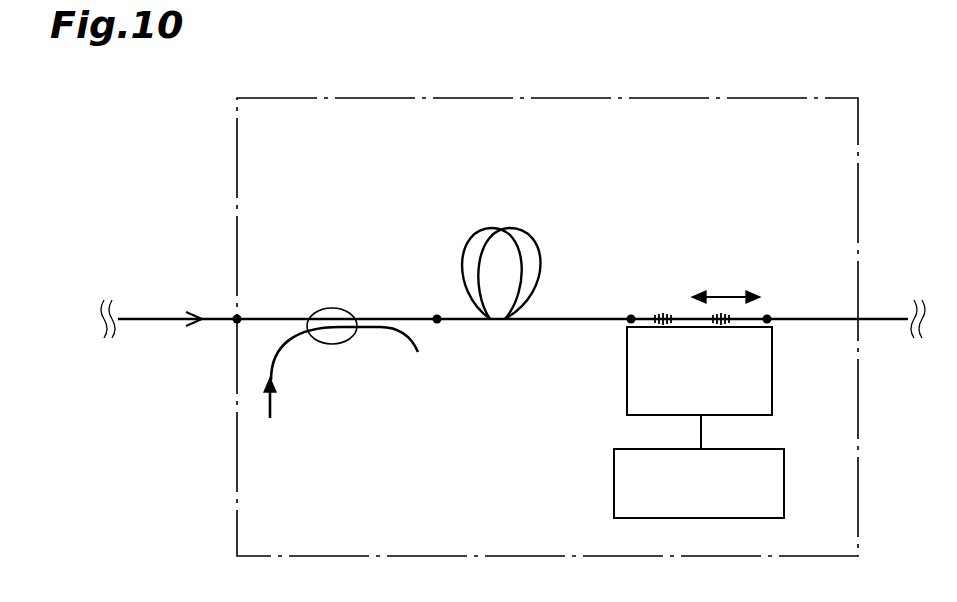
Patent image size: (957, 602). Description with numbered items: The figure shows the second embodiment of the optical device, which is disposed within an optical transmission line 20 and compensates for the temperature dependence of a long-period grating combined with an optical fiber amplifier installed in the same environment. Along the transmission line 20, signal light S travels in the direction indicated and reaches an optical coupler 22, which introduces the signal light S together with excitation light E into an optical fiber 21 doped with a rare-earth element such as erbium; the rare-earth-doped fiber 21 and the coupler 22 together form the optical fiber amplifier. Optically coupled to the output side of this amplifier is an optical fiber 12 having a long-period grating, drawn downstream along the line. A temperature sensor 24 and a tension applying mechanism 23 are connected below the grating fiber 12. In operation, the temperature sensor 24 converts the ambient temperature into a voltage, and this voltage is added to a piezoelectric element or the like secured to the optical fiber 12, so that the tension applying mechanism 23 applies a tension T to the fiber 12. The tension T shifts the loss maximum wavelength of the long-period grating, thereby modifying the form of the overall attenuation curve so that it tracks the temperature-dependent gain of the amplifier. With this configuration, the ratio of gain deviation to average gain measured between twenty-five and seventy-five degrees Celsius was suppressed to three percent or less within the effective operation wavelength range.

The optical fiber having a long-period grating 12 is at (673, 313).
The optical transmission line 20 is at (150, 316).
The rare-earth-doped optical fiber 21 is at (509, 224).
The optical coupler 22 is at (330, 308).
The tension applying mechanism 23 is at (772, 352).
The temperature sensor 24 is at (784, 484).
The signal light S is at (200, 310).
The tension T is at (731, 297).
The excitation light E is at (283, 397).